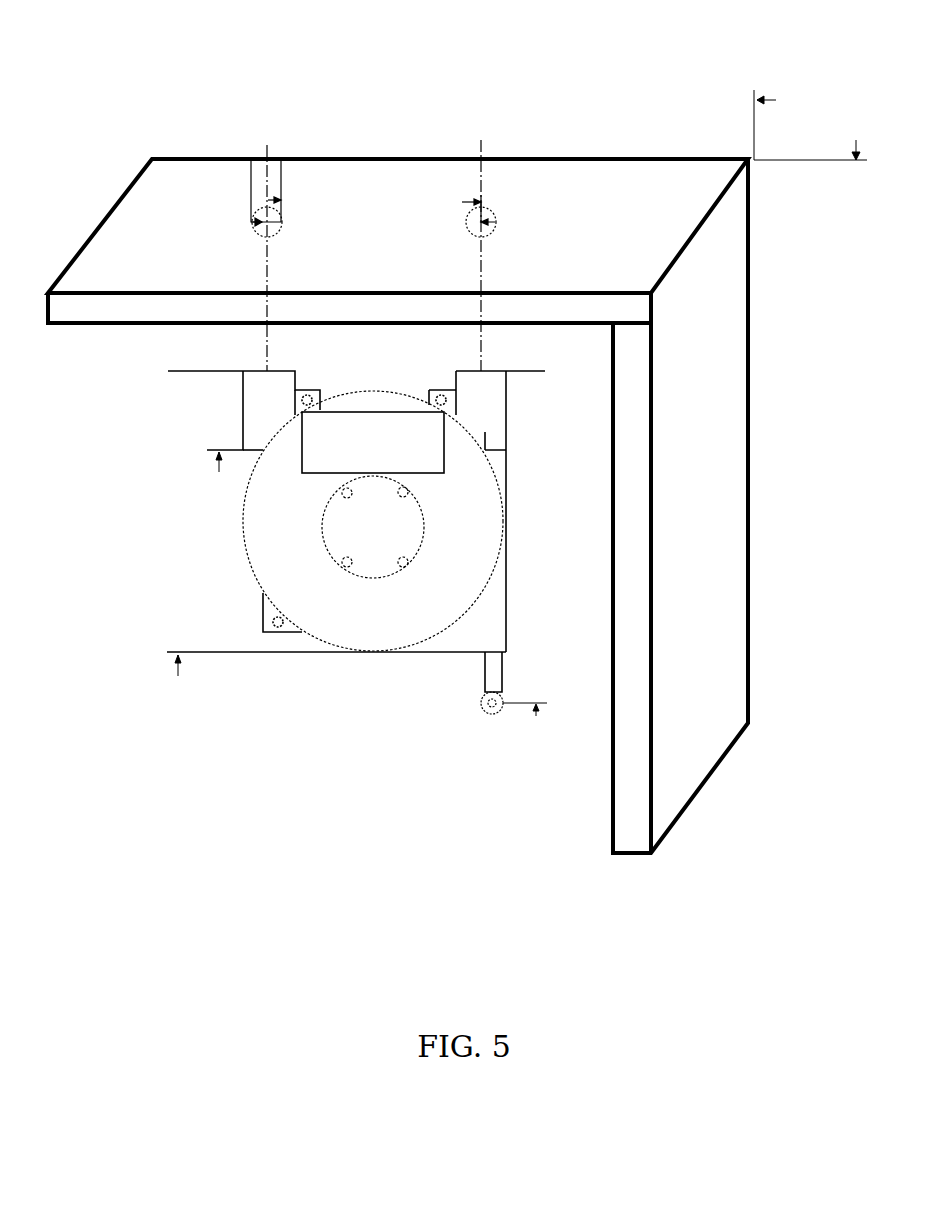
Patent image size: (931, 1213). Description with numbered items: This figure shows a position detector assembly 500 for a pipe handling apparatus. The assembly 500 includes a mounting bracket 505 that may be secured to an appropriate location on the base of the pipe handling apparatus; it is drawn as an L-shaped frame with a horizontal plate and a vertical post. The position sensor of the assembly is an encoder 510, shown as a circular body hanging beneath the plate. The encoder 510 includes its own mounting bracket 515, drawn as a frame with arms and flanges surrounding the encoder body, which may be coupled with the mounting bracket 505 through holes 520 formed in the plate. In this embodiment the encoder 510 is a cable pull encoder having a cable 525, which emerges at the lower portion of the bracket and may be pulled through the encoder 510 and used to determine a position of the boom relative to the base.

The position detector assembly 500 is at (778, 66).
The mounting bracket 505 is at (748, 586).
The encoder 510 is at (502, 494).
The mounting bracket 515 is at (506, 371).
The holes 520 is at (281, 222).
The cable 525 is at (500, 680).